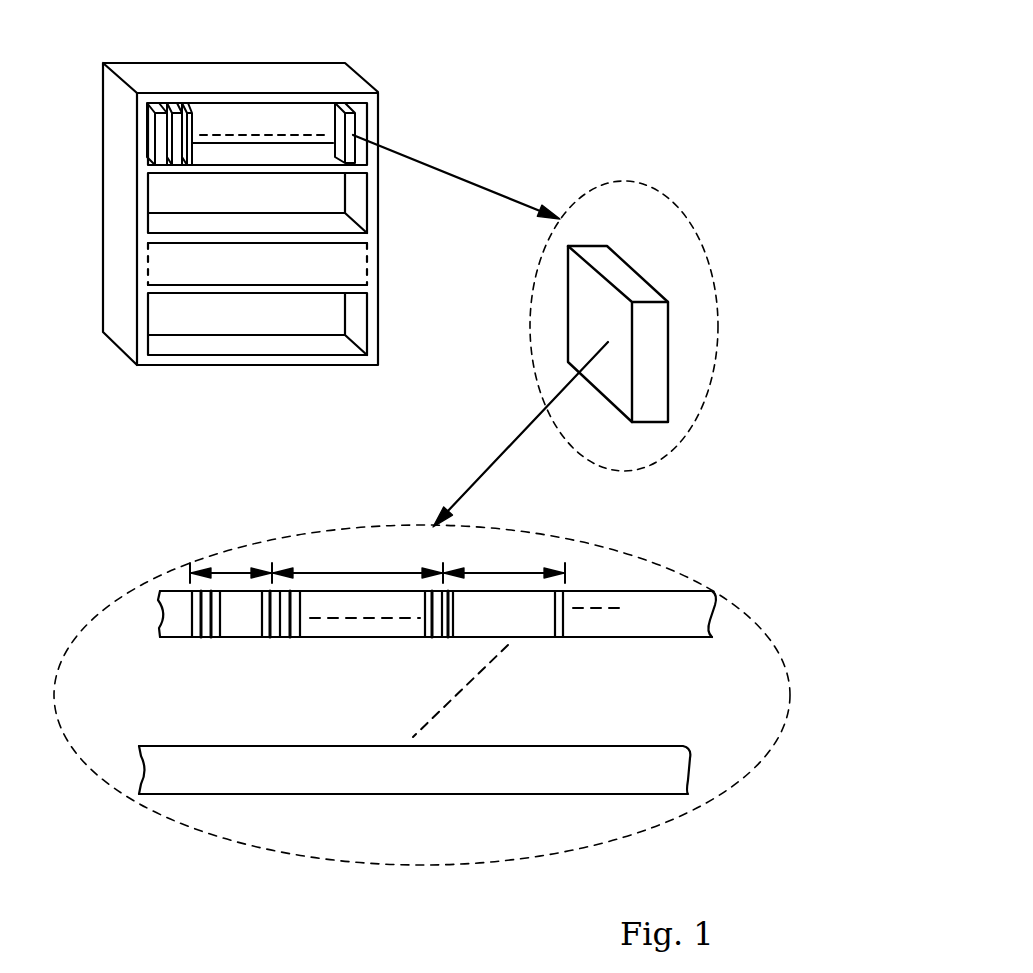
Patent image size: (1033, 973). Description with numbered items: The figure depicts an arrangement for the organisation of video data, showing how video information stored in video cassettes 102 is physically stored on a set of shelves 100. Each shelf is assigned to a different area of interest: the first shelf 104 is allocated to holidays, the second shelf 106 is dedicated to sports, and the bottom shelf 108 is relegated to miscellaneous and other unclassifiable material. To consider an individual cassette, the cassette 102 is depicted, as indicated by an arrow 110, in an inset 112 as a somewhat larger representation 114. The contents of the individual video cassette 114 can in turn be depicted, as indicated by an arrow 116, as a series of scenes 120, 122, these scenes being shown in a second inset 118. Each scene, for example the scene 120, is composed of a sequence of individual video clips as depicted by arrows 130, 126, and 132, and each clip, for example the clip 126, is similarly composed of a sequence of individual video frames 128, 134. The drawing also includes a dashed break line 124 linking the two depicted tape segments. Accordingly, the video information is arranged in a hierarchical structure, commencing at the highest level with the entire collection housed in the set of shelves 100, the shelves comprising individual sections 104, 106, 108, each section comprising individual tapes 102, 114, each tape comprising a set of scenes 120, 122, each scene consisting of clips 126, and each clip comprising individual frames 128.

The set of shelves 100 is at (295, 72).
The video cassette 102 is at (352, 123).
The first shelf 104 is at (142, 135).
The second shelf 106 is at (140, 200).
The bottom shelf 108 is at (143, 322).
The arrow 110 is at (448, 173).
The inset 112 is at (623, 180).
The larger representation of video cassette 114 is at (660, 293).
The arrow 116 is at (500, 455).
The inset 118 is at (255, 540).
The scene 120 is at (657, 588).
The scene 122 is at (617, 745).
The break line 124 is at (468, 683).
The clip 126 is at (397, 572).
The video frame 128 is at (278, 638).
The arrow 130 is at (227, 573).
The arrow 132 is at (505, 567).
The video frame 134 is at (442, 638).